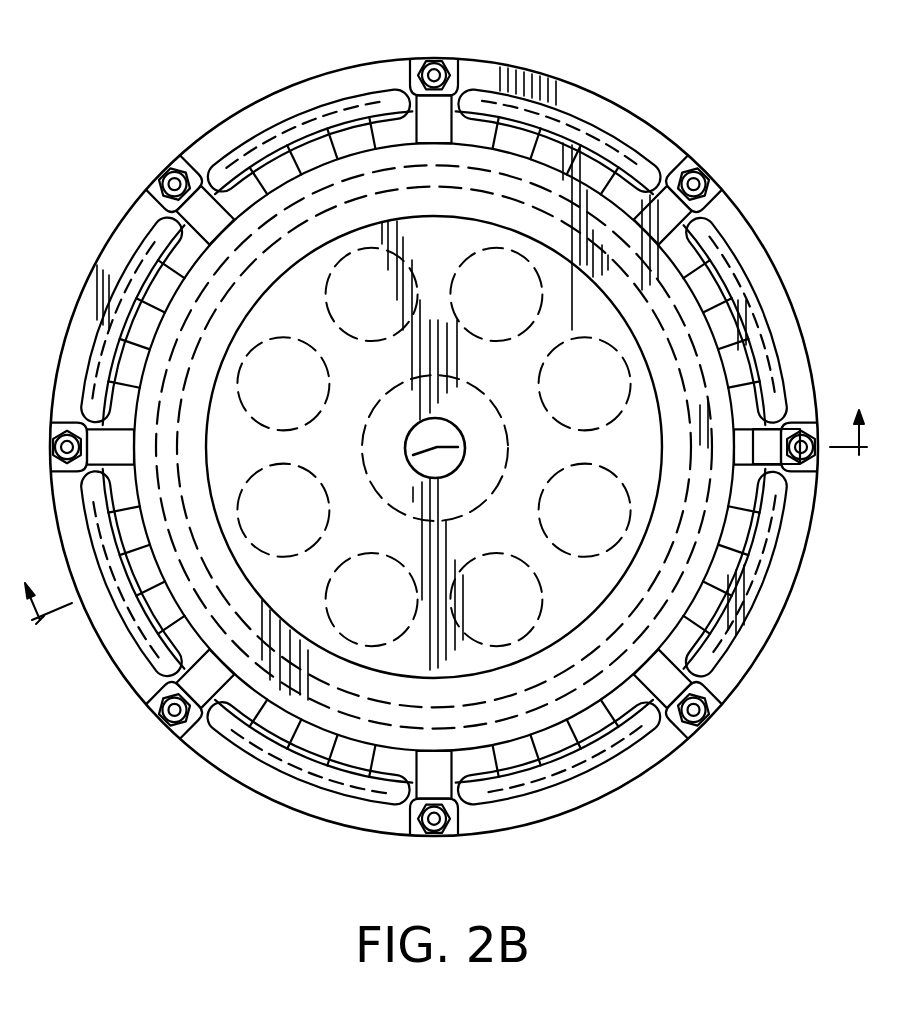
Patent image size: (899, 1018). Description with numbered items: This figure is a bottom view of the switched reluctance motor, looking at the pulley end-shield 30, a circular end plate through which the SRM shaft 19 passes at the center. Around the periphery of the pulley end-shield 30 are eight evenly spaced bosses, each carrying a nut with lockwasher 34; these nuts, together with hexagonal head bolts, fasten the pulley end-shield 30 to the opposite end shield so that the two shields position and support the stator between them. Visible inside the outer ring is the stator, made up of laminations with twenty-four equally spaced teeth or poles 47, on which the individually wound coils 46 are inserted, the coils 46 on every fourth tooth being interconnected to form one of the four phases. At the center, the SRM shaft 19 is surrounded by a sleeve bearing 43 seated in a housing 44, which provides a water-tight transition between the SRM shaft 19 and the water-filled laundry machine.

The SRM shaft 19 is at (418, 432).
The pulley end-shield 30 is at (770, 622).
The nut with lockwasher 34 is at (437, 62).
The sleeve bearing 43 is at (473, 480).
The housing 44 is at (652, 450).
The coils 46 is at (746, 470).
The poles 47 is at (747, 447).